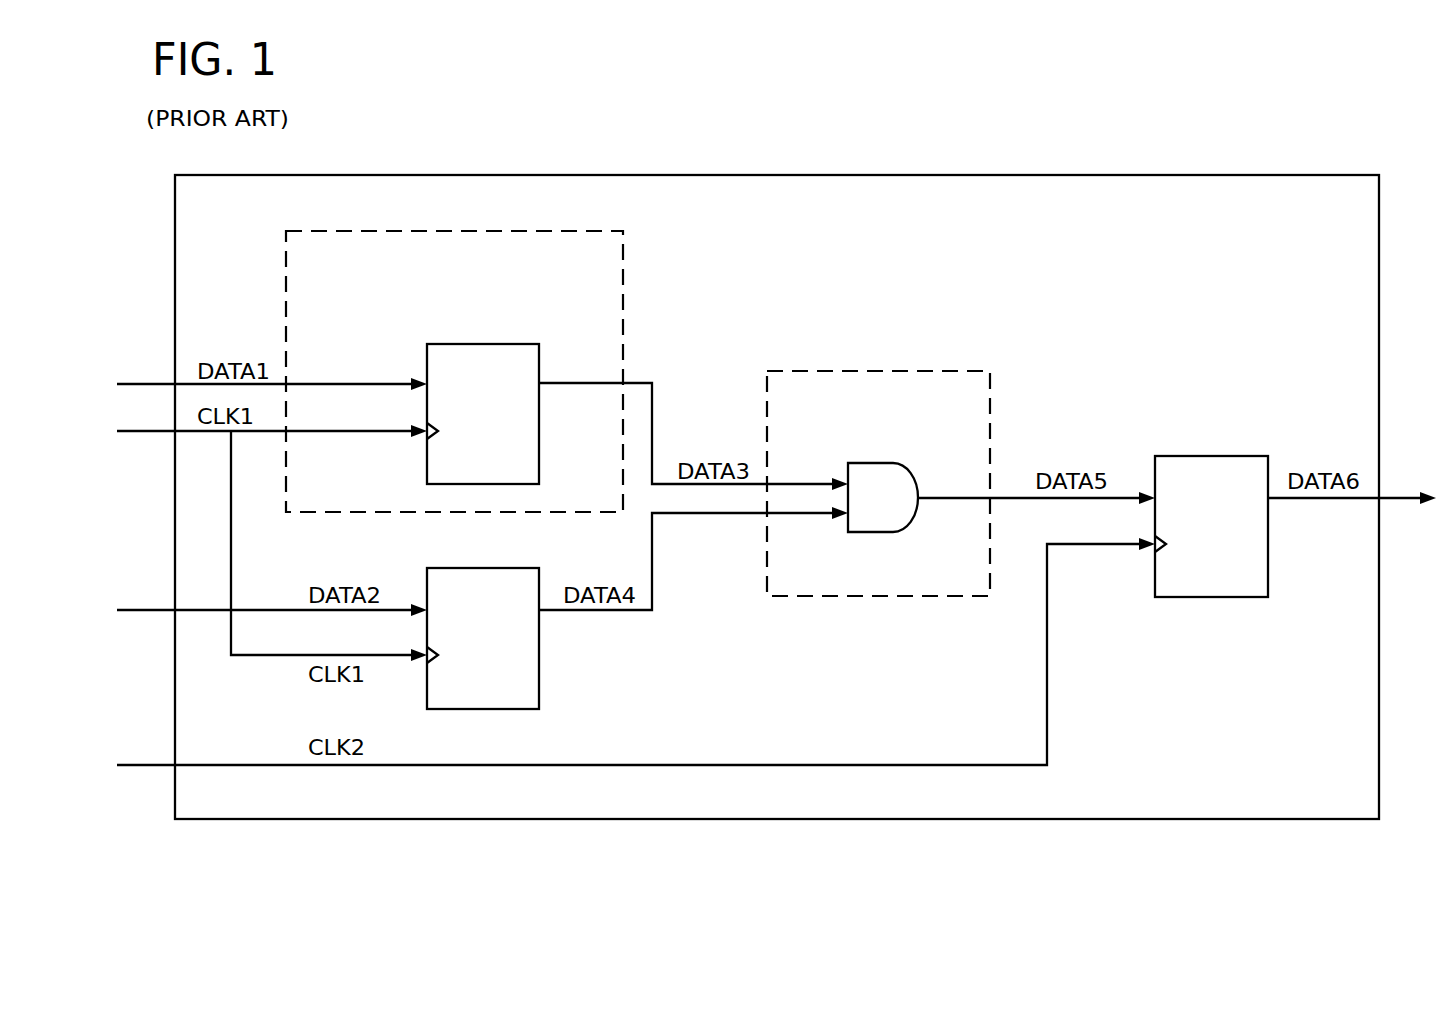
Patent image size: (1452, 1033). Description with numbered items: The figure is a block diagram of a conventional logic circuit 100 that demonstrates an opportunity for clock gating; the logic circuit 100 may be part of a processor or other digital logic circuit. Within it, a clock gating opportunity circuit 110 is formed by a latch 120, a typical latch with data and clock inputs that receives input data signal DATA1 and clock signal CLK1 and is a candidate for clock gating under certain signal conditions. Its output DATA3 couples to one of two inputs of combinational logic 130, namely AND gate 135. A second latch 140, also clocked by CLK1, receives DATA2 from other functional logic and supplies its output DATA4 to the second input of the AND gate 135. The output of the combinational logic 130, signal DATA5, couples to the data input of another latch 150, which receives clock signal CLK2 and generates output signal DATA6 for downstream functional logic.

The logic circuit 100 is at (768, 133).
The clock gating opportunity circuit 110 is at (462, 354).
The latch 120 is at (511, 394).
The combinational logic 130 is at (902, 460).
The AND gate 135 is at (859, 517).
The latch 140 is at (501, 619).
The latch 150 is at (1230, 506).